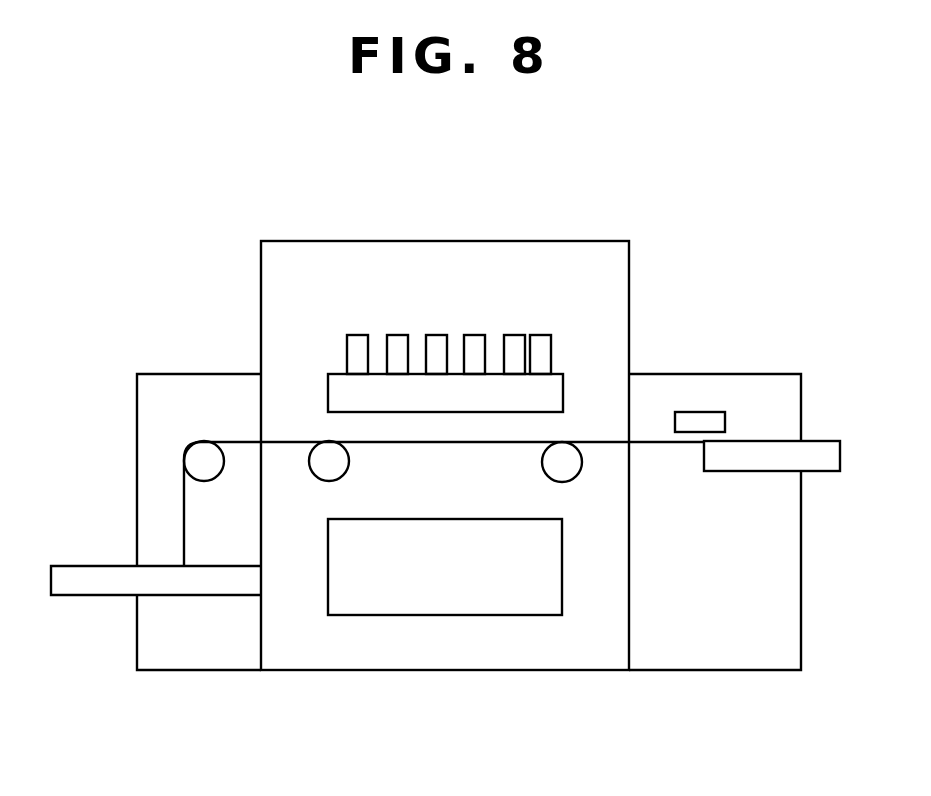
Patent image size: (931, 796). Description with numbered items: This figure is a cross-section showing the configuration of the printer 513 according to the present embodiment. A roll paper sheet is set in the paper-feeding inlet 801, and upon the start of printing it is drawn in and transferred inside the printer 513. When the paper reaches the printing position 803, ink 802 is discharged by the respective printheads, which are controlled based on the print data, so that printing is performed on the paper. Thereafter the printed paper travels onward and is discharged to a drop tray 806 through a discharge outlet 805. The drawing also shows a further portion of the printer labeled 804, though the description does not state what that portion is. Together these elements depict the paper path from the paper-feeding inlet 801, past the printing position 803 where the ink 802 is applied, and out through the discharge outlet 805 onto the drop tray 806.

The printer 513 is at (502, 241).
The paper-feeding inlet 801 is at (88, 597).
The ink 802 is at (357, 335).
The printing position 803 is at (440, 617).
The post-processing unit 804 is at (672, 374).
The discharge outlet 805 is at (713, 412).
The drop tray 806 is at (745, 473).